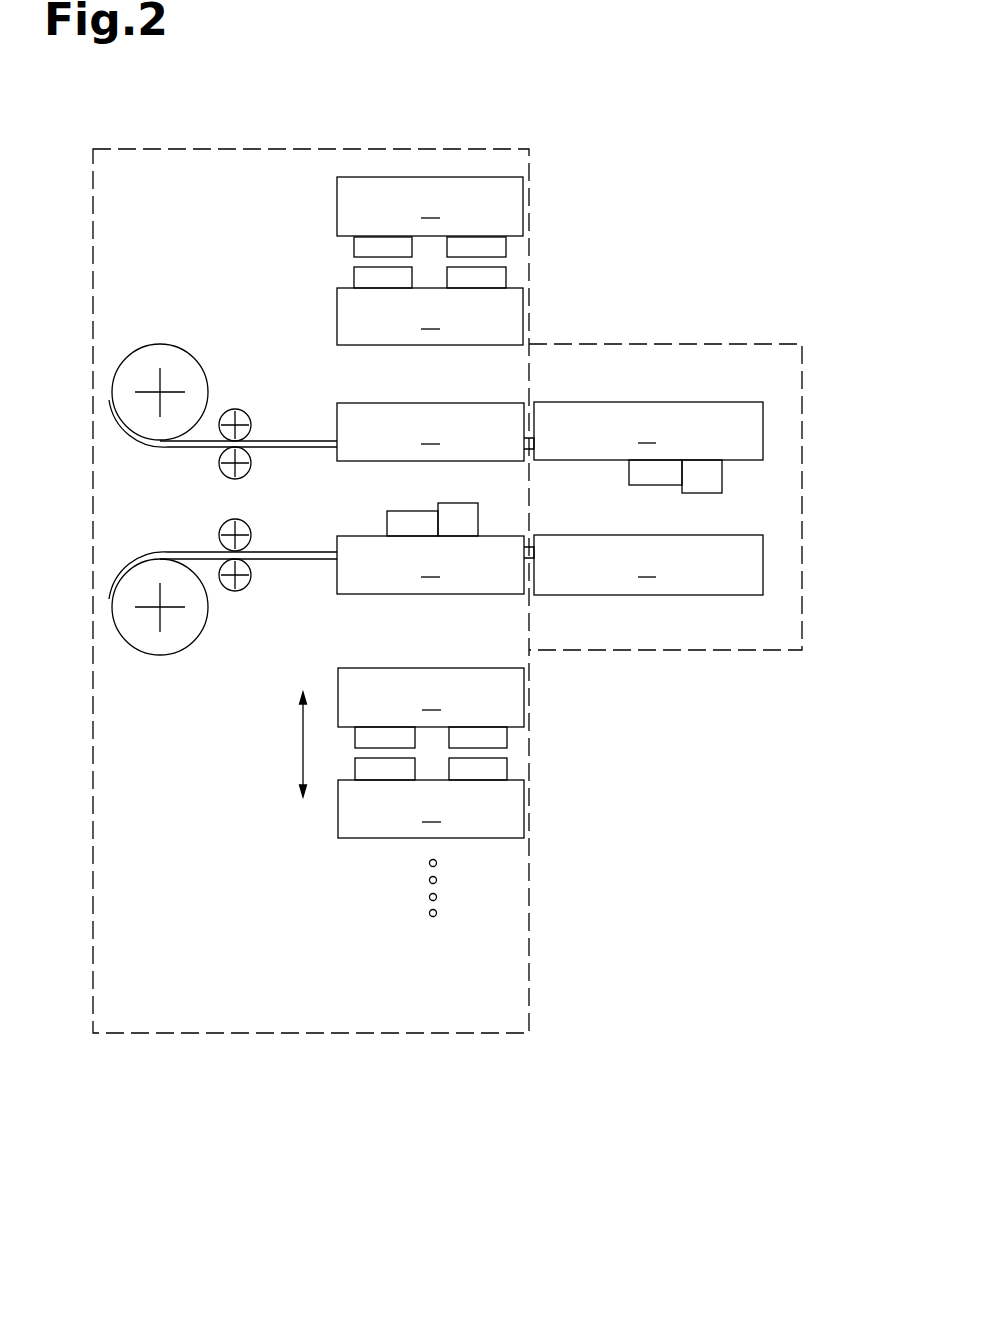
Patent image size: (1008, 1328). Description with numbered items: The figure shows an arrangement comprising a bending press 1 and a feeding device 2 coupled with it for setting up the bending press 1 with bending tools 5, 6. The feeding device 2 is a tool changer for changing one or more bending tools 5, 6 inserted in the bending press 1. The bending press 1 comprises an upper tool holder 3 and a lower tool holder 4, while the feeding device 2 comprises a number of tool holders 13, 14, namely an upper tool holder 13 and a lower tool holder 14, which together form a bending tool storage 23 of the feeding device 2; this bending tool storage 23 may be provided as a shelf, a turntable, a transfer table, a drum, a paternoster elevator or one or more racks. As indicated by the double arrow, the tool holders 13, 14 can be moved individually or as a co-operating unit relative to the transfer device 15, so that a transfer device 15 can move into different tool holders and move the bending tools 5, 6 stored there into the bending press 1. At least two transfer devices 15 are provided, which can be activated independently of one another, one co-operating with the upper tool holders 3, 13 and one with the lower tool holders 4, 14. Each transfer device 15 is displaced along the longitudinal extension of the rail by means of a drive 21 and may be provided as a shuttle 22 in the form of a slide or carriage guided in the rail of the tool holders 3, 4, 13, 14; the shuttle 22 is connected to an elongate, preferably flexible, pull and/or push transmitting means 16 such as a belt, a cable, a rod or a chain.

The bending press 1 is at (727, 650).
The feeding device 2 is at (395, 1033).
The upper tool holder 3 is at (643, 431).
The lower tool holder 4 is at (643, 565).
The bending tool 5 is at (506, 247).
The bending tool 6 is at (506, 277).
The upper tool holder 13 is at (430, 452).
The lower tool holder 14 is at (430, 602).
The transfer device 15 is at (292, 345).
The pull and/or push transmitting means 16 is at (285, 438).
The drive 21 is at (237, 405).
The shuttle 22 is at (412, 510).
The bending tool storage 23 is at (325, 802).